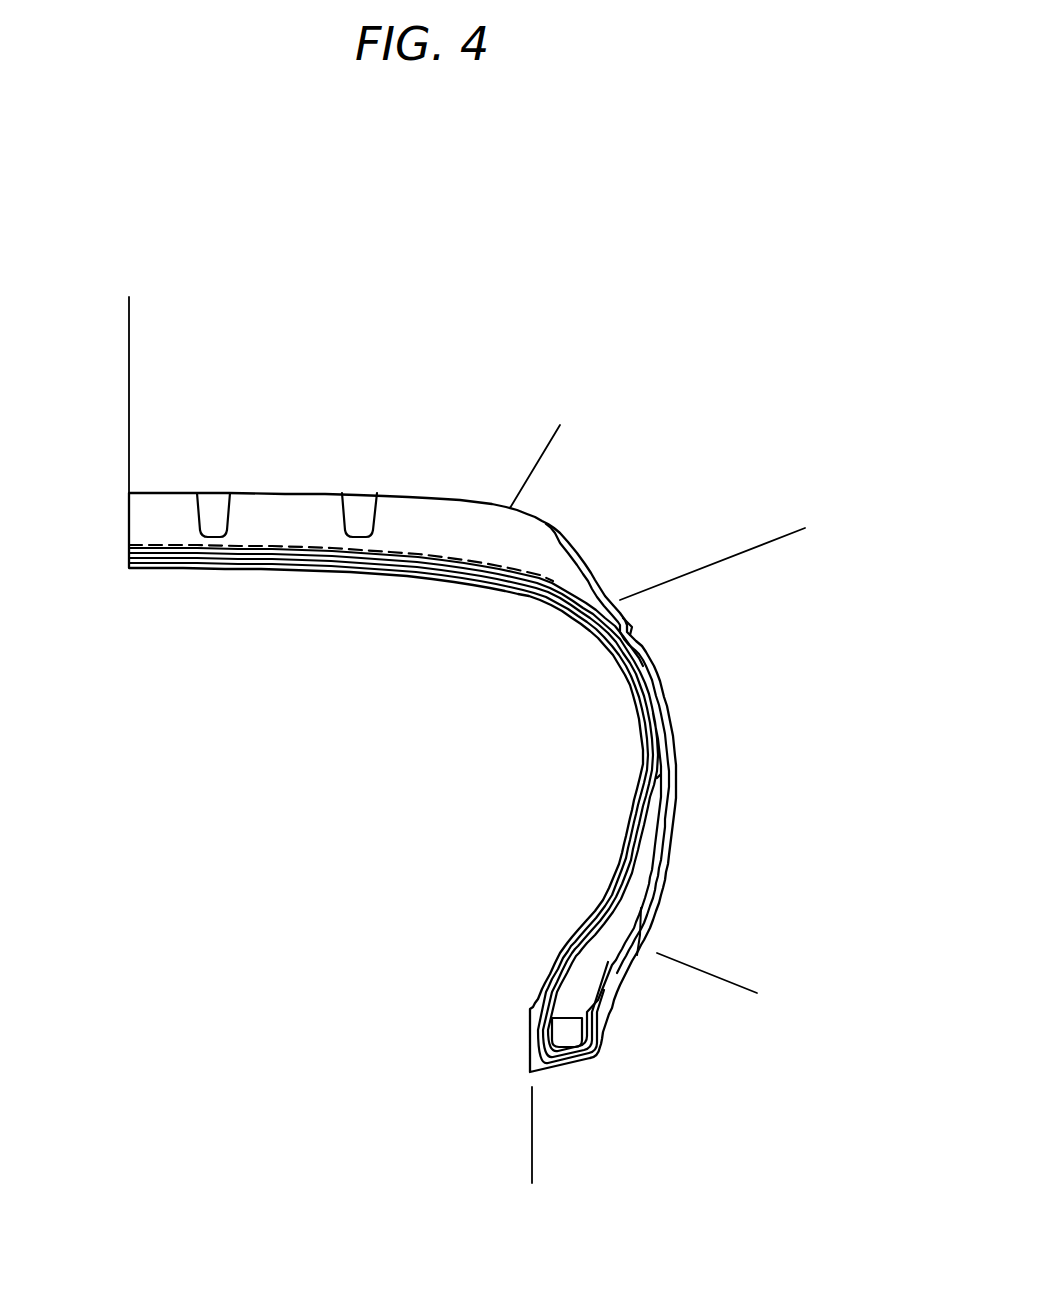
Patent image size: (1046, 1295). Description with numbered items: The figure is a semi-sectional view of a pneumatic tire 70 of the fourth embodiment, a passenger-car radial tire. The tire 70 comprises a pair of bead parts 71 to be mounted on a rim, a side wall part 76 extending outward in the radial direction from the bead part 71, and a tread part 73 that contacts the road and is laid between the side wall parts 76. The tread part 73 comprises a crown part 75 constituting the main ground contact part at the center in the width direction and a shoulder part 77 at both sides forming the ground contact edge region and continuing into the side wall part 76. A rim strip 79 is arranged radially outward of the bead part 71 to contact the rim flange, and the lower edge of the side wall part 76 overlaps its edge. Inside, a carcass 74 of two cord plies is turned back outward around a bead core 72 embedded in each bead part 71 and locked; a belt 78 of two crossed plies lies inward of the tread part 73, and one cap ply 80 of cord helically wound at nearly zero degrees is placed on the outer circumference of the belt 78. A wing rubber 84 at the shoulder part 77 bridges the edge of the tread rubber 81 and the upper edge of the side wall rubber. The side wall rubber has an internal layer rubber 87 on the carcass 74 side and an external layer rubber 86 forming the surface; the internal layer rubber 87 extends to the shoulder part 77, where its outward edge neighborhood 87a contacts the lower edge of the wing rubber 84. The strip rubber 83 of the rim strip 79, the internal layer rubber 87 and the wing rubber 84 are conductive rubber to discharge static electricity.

The pneumatic tire 70 is at (583, 216).
The bead part 71 is at (732, 980).
The bead core 72 is at (560, 1037).
The tread part 73 is at (770, 520).
The carcass 74 is at (642, 758).
The crown part 75 is at (531, 440).
The side wall part 76 is at (692, 573).
The shoulder part 77 is at (547, 451).
The belt 78 is at (297, 568).
The rim strip 79 is at (618, 1013).
The cap ply 80 is at (413, 543).
The tread rubber 81 is at (265, 510).
The strip rubber 83 is at (628, 955).
The wing rubber 84 is at (603, 585).
The external layer rubber 86 is at (668, 718).
The internal layer rubber 87 is at (652, 703).
The outward edge neighborhood 87a is at (594, 643).